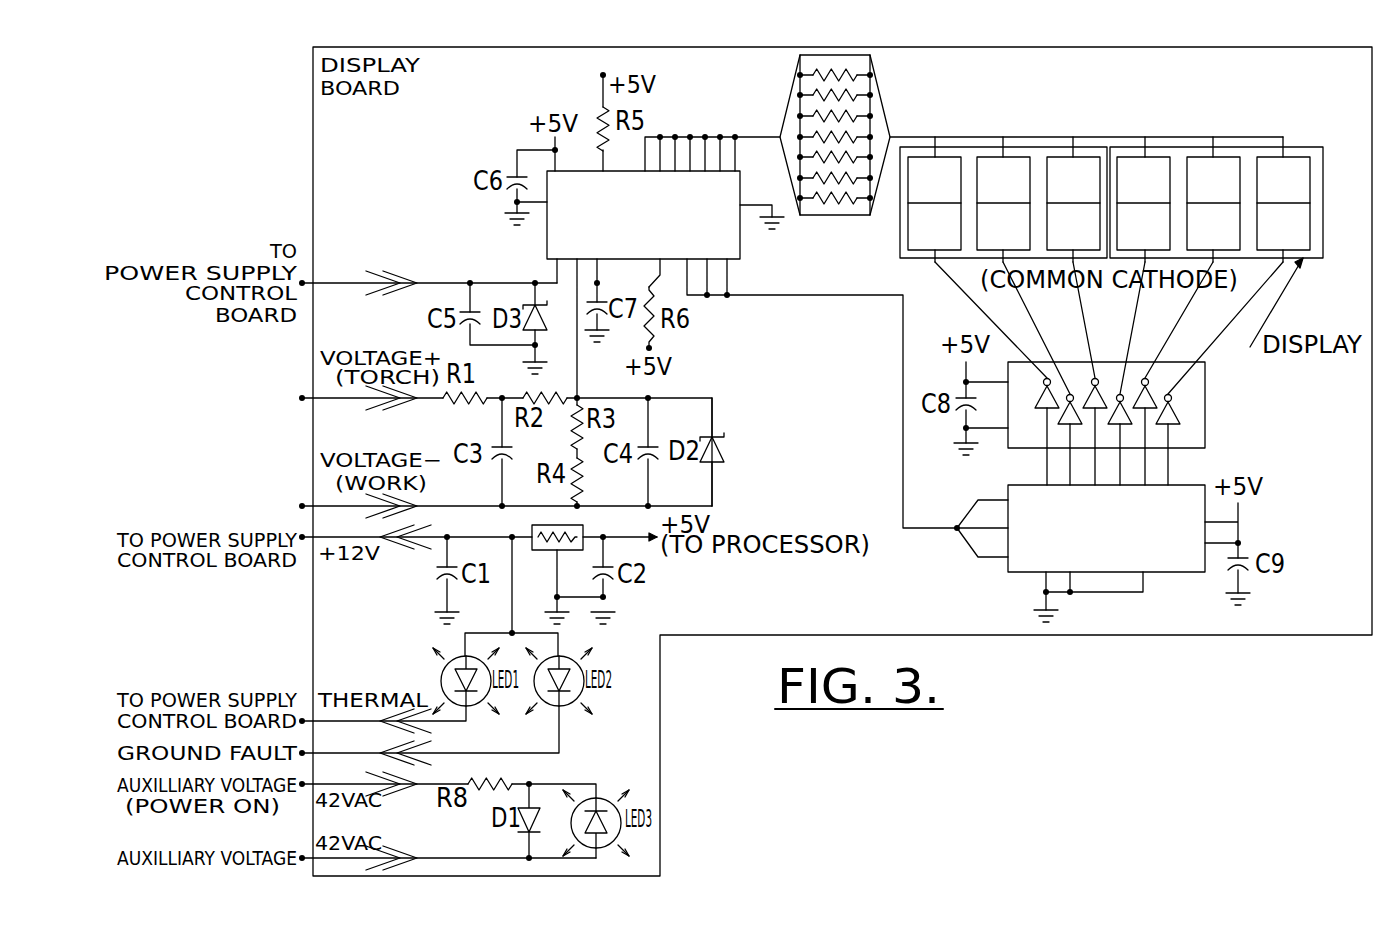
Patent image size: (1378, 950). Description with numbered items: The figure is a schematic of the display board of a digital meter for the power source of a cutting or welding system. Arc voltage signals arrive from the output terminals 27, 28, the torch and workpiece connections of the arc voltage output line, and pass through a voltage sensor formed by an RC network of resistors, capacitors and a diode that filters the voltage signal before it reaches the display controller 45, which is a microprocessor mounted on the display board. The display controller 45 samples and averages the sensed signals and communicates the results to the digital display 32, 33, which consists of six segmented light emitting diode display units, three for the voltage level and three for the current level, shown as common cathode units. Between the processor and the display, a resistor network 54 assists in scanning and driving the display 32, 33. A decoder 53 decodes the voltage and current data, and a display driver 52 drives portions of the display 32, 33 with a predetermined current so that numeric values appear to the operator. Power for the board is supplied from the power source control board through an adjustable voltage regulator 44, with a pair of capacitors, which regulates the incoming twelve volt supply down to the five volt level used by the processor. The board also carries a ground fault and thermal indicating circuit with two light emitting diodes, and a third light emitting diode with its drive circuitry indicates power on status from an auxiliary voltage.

The display controller 45 is at (660, 235).
The resistor network 54 is at (785, 113).
The digital display 32 is at (1043, 150).
The digital display 33 is at (1267, 150).
The display driver 52 is at (1205, 407).
The decoder 53 is at (1170, 573).
The adjustable voltage regulator 44 is at (583, 530).
The output terminal 27 is at (311, 401).
The output terminal 28 is at (414, 496).